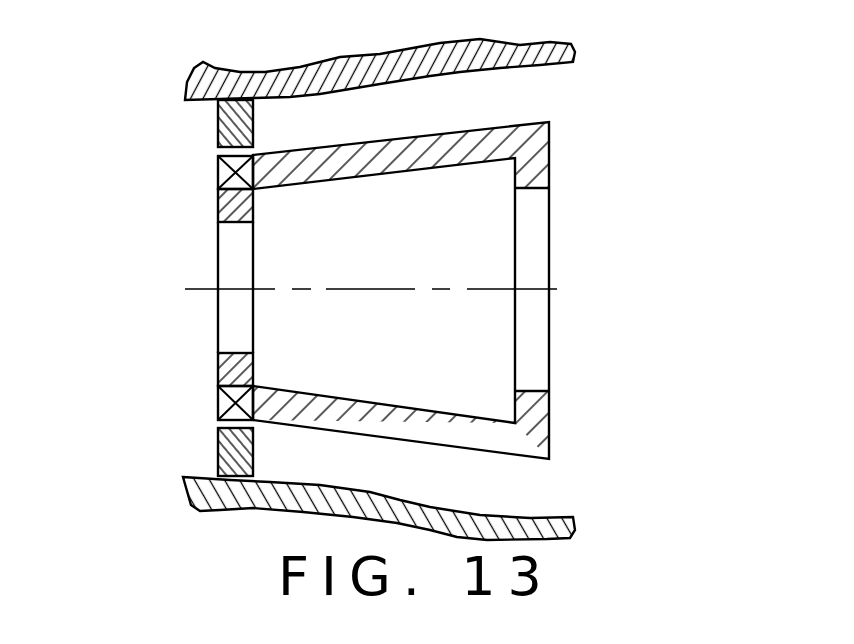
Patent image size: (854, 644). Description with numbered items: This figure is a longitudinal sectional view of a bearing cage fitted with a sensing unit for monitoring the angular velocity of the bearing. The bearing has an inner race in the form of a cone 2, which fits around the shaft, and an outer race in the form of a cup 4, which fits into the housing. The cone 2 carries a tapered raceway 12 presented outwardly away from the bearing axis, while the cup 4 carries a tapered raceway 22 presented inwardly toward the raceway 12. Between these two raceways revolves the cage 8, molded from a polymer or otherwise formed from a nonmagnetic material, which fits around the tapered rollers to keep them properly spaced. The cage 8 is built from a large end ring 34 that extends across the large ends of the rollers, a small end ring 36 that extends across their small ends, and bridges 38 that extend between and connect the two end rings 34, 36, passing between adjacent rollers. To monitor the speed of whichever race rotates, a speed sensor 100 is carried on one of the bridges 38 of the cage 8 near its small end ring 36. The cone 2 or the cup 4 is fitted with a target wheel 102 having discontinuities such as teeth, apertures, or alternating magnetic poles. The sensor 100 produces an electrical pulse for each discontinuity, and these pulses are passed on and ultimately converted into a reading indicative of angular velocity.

The cone 2 is at (379, 500).
The cup 4 is at (359, 79).
The cage 8 is at (440, 267).
The tapered raceway 12 is at (320, 486).
The tapered raceway 22 is at (370, 86).
The large end ring 34 is at (535, 170).
The small end ring 36 is at (222, 203).
The bridges 38 is at (391, 163).
The speed sensor 100 is at (218, 172).
The target wheel 102 is at (220, 125).